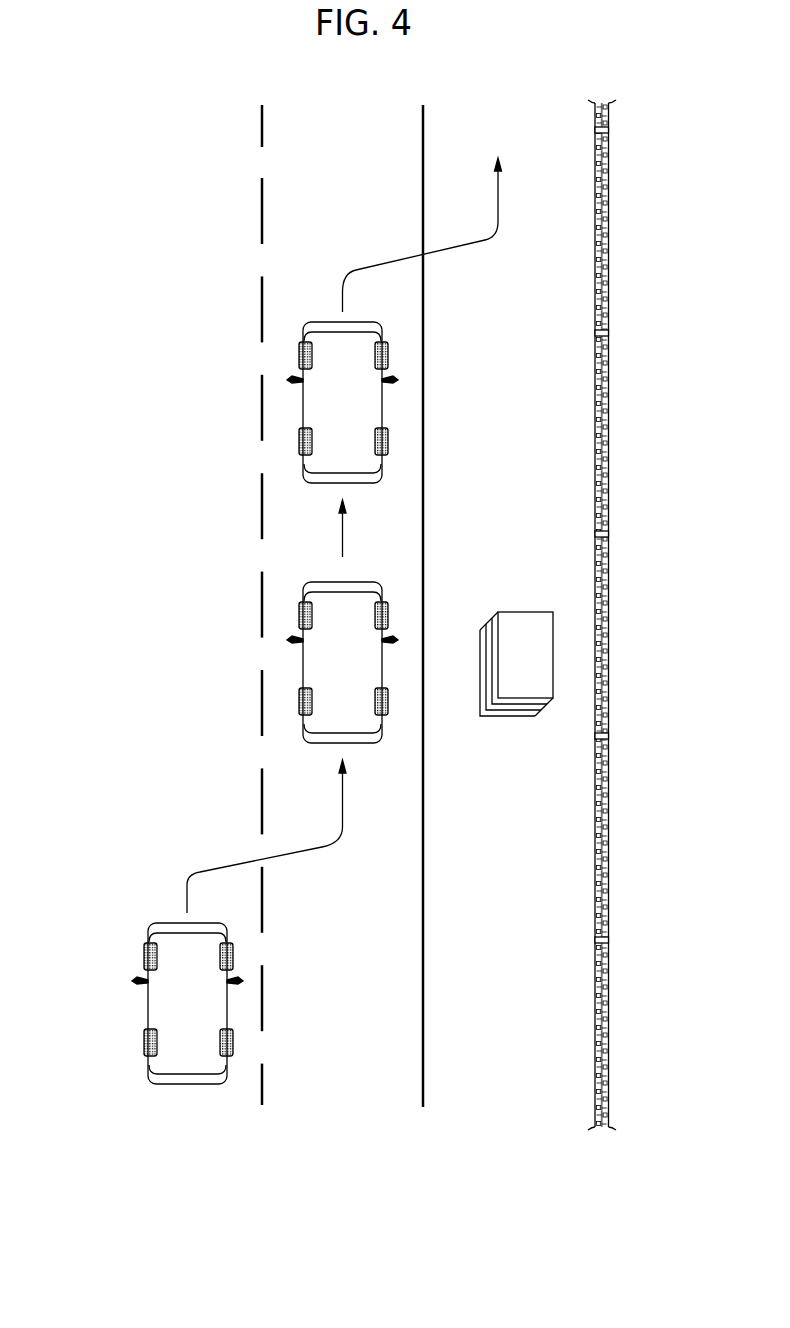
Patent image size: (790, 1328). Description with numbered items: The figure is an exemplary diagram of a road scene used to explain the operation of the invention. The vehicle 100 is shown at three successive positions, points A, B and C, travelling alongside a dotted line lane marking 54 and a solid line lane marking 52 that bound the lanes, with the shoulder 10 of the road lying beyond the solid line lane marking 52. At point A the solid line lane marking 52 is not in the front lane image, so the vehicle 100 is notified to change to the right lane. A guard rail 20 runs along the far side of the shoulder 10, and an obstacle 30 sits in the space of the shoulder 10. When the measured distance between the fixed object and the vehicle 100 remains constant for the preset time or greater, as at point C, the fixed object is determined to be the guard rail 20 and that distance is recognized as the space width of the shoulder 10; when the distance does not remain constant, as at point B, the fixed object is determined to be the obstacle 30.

The vehicle 100 is at (303, 405).
The shoulder of the road 10 is at (545, 877).
The guard rail 20 is at (608, 466).
The obstacle 30 is at (520, 656).
The solid line lane marking 52 is at (423, 990).
The dotted line lane marking 54 is at (262, 784).